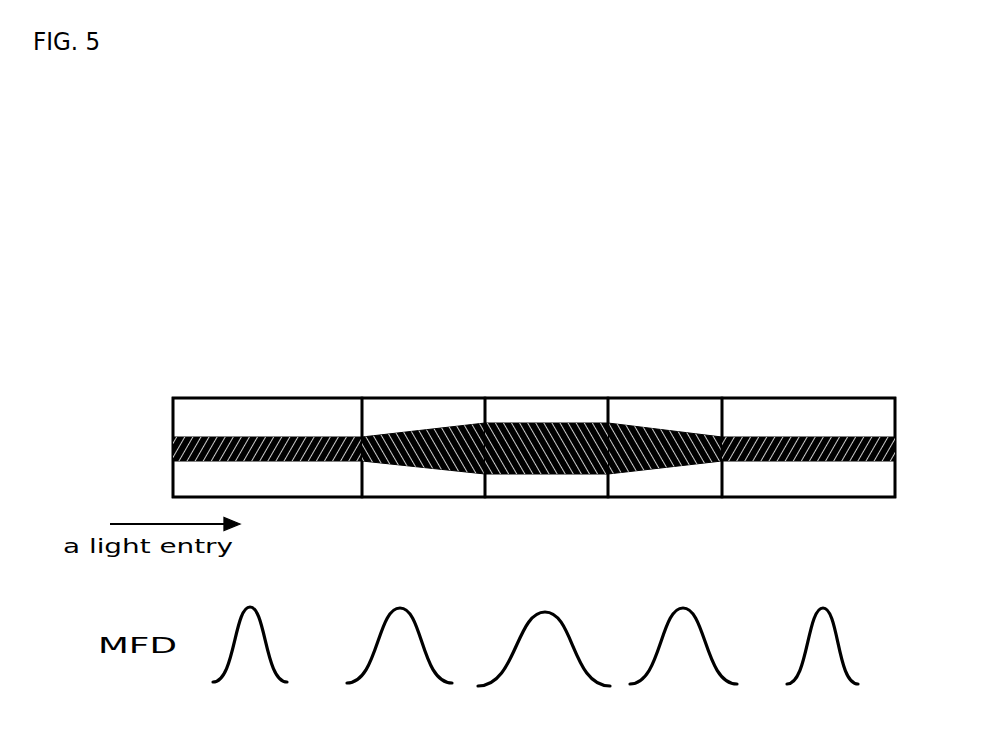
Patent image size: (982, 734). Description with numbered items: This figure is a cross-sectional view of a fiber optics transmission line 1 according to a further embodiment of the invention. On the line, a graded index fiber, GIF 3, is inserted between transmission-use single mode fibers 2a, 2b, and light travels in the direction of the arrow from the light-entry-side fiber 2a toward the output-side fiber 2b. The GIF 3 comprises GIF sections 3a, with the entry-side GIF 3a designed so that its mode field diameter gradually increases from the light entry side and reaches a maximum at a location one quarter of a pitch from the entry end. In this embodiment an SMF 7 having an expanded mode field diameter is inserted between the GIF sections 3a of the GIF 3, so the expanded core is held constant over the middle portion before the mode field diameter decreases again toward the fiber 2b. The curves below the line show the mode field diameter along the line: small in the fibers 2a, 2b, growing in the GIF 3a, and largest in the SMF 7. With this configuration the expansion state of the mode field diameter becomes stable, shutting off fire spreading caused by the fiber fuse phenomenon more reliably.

The fiber optics transmission line 1 is at (635, 318).
The transmission-use single mode fiber 2a is at (225, 398).
The transmission-use single mode fiber 2b is at (815, 398).
The GIF 3 is at (582, 400).
The GIF 3a is at (385, 398).
The SMF having an expanded MFD 7 is at (548, 398).